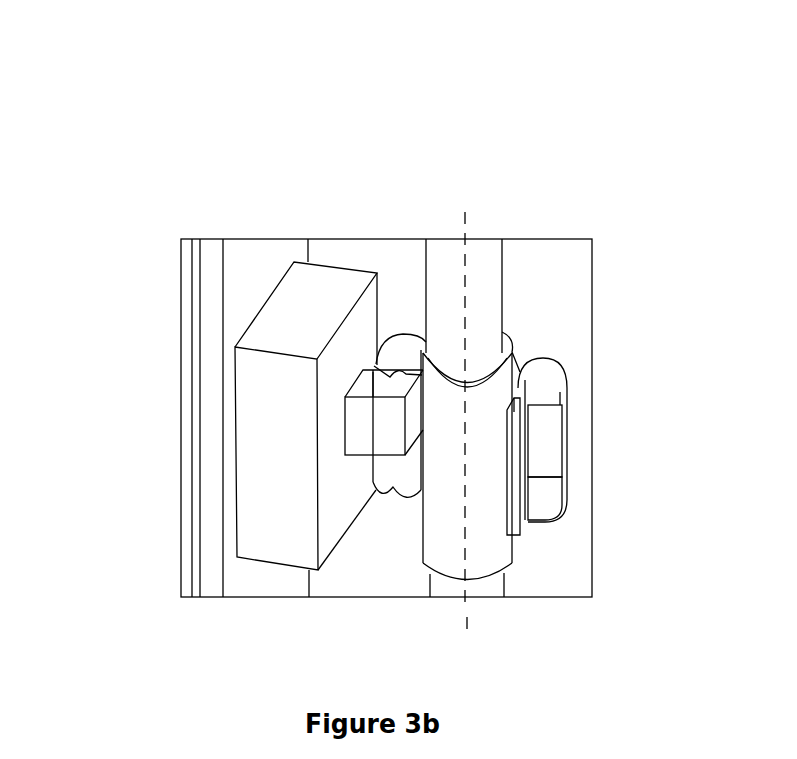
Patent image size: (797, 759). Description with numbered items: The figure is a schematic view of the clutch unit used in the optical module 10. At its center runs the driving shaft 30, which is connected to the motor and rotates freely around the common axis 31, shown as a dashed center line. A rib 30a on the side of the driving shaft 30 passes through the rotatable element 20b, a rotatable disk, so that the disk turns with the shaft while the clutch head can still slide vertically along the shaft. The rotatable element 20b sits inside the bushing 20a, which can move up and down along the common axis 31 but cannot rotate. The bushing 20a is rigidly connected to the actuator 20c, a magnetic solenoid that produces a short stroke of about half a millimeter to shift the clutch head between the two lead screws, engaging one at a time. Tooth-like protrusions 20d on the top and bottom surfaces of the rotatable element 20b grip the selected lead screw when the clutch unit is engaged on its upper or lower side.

The module 10 is at (497, 157).
The bushing 20a is at (548, 440).
The rotatable element 20b is at (545, 403).
The actuator 20c is at (262, 410).
The tooth-like protrusions 20d is at (543, 358).
The driving shaft 30 is at (437, 259).
The rib 30a is at (500, 477).
The common axis 31 is at (469, 620).